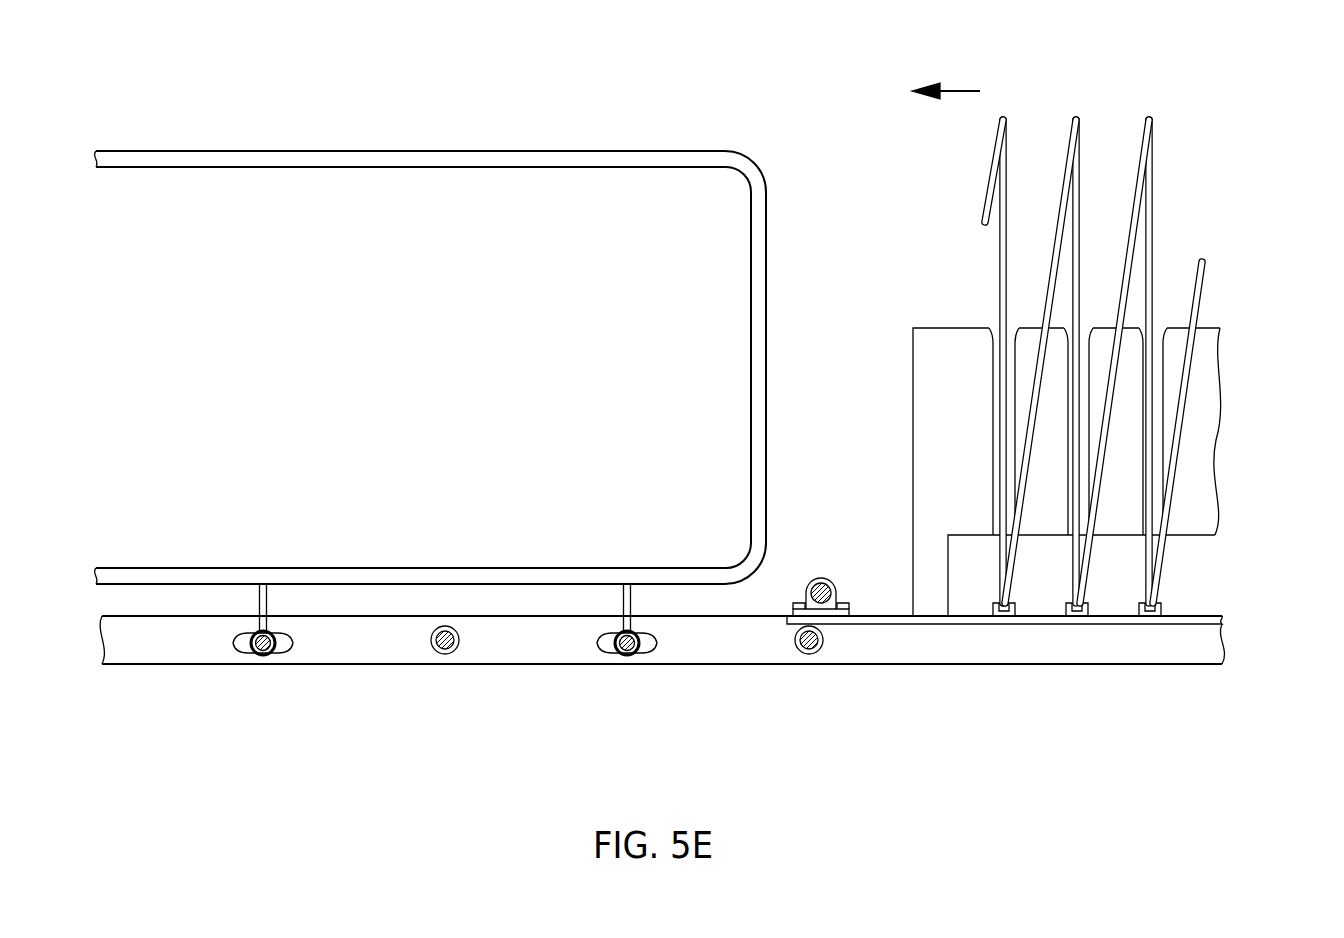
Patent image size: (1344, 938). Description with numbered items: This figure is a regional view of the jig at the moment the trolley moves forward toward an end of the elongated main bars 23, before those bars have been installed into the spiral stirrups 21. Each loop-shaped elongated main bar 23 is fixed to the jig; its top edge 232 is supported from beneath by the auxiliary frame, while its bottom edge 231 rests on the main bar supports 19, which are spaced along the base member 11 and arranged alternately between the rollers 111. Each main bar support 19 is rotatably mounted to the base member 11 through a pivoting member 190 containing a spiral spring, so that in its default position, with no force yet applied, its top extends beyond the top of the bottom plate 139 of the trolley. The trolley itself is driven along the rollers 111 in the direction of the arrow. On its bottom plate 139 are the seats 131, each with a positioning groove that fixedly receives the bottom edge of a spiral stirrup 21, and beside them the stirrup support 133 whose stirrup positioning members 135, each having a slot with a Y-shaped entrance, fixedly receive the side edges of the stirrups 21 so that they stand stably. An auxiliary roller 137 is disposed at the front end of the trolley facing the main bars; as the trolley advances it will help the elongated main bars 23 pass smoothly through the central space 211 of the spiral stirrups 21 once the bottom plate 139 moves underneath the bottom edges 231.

The base member 11 is at (1160, 646).
The rollers 111 is at (445, 652).
The main bar support 19 is at (455, 663).
The pivoting member 190 is at (252, 655).
The spiral stirrup 21 is at (1094, 312).
The central space 211 is at (1140, 280).
The elongated main bar 23 is at (430, 313).
The bottom edge 231 is at (388, 578).
The top edge 232 is at (427, 160).
The seat 131 is at (1161, 607).
The stirrup support 133 is at (1101, 406).
The stirrup positioning member 135 is at (996, 355).
The auxiliary roller 137 is at (821, 578).
The bottom plate 139 is at (876, 615).